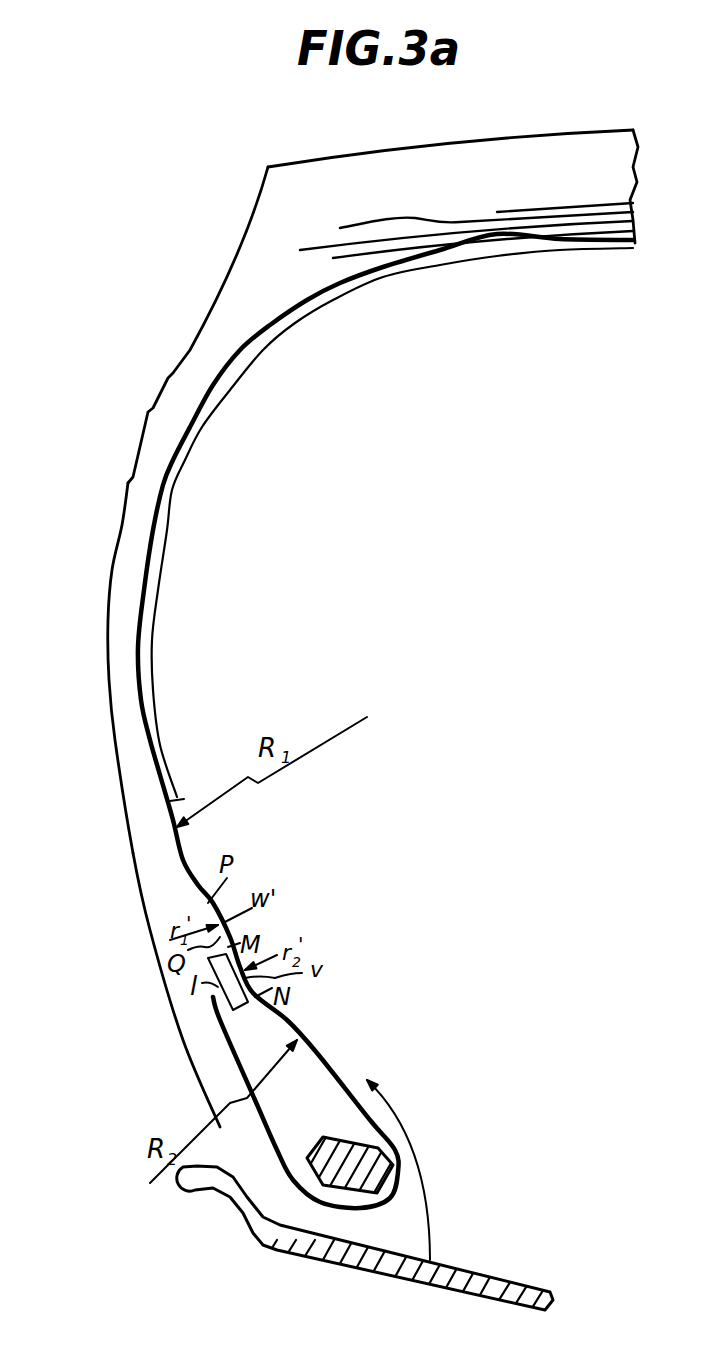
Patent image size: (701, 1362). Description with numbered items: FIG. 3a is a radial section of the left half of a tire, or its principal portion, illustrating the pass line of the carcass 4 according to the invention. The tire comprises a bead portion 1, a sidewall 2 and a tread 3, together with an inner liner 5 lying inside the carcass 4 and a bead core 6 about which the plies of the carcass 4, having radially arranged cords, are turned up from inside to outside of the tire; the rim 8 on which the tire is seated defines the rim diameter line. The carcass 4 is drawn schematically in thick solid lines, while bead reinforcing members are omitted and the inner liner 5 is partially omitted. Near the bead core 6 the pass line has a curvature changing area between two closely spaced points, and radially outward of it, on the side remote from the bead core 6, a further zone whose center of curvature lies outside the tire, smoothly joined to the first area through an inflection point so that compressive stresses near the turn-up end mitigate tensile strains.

The bead portion 1 is at (205, 1060).
The sidewall 2 is at (115, 648).
The tread 3 is at (494, 150).
The carcass 4 is at (190, 427).
The inner liner 5 is at (267, 347).
The bead core 6 is at (397, 1160).
The rim 8 is at (462, 1277).